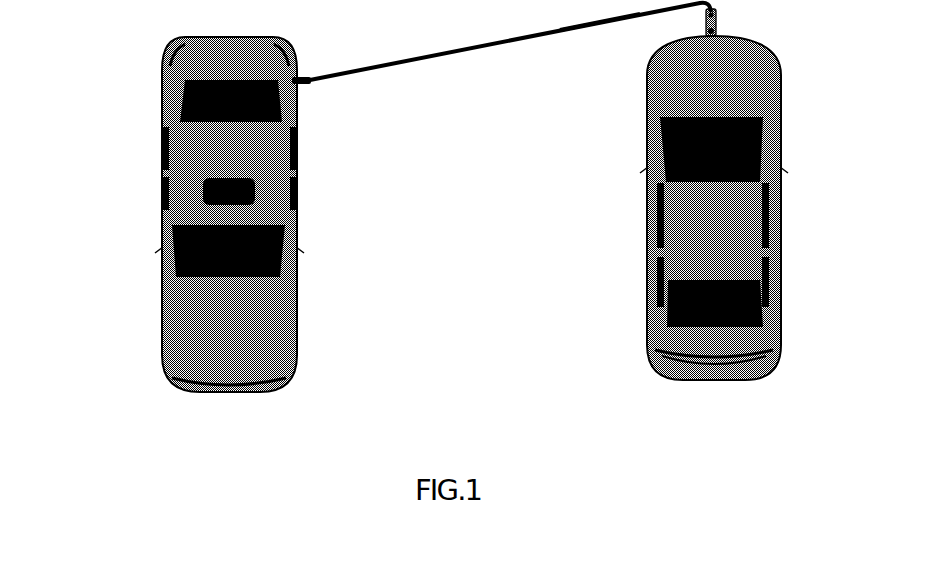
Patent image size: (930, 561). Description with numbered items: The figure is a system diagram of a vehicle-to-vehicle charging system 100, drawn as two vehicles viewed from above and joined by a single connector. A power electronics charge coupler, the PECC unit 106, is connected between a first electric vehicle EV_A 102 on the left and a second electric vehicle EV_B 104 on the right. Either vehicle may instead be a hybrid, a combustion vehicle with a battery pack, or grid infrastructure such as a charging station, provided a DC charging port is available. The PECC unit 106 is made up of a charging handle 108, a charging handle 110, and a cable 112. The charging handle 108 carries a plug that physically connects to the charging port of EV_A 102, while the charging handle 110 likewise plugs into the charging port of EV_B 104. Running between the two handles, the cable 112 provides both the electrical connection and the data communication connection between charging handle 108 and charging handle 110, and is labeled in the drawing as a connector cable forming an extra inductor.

The V2V charging system 100 is at (104, 40).
The EV_A 102 is at (297, 204).
The EV_B 104 is at (647, 240).
The PECC unit 106 is at (397, 70).
The charging handle 108 is at (313, 87).
The charging handle 110 is at (716, 14).
The cable 112 is at (580, 33).